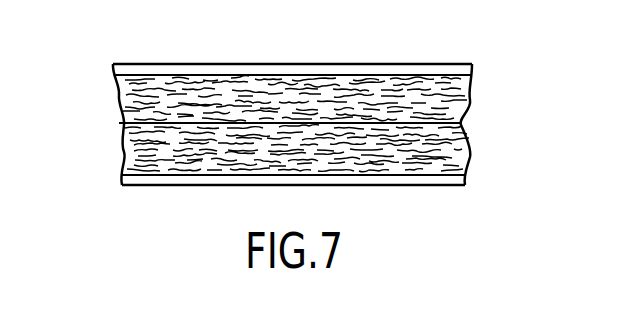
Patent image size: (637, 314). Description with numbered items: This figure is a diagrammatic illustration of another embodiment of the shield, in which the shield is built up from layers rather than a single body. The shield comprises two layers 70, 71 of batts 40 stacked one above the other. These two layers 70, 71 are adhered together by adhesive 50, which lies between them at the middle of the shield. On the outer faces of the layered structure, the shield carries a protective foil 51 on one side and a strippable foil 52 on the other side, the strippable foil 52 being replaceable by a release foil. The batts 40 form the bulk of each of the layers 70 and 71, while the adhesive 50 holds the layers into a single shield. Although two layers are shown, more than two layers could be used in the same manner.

The batts 40 is at (199, 81).
The adhesive 50 is at (468, 125).
The protective foil 51 is at (415, 185).
The strippable foil 52 is at (340, 64).
The layer 70 is at (472, 102).
The layer 71 is at (468, 160).